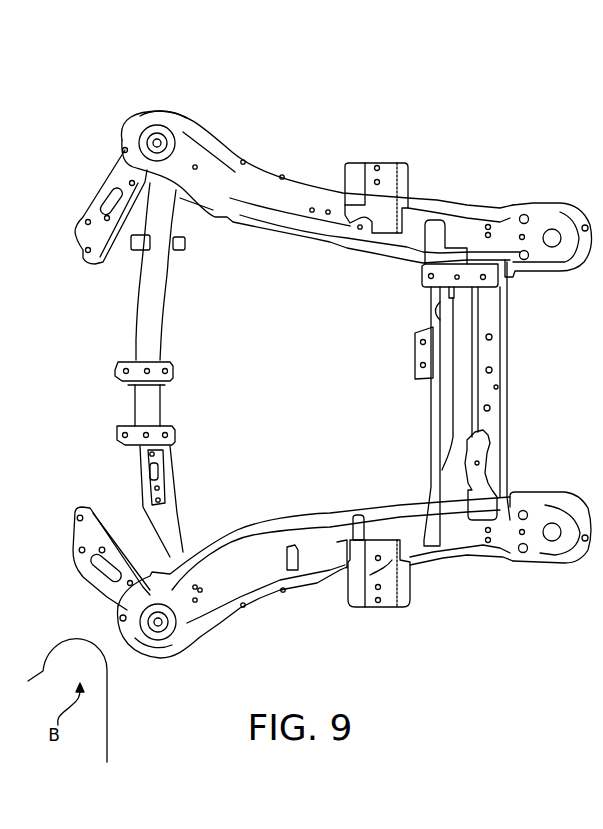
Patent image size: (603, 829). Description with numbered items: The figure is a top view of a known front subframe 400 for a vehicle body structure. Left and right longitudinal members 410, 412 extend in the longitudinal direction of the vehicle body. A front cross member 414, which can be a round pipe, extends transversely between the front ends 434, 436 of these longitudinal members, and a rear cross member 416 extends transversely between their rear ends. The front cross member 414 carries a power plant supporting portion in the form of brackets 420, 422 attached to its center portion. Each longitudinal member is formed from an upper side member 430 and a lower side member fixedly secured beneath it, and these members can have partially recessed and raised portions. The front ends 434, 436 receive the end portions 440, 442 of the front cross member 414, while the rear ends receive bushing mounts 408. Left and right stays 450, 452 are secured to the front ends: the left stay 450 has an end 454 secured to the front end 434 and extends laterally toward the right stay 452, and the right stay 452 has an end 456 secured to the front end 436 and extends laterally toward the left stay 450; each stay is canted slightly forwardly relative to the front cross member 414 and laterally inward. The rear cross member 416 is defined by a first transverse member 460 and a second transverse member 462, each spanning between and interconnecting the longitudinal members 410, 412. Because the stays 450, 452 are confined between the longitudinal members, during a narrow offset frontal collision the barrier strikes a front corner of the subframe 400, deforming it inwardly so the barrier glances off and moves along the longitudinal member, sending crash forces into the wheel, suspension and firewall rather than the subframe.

The front subframe 400 is at (524, 142).
The bushing mounts 408 is at (551, 228).
The left longitudinal member 410 is at (274, 514).
The right longitudinal member 412 is at (316, 246).
The front cross member 414 is at (136, 406).
The rear cross member 416 is at (500, 370).
The bracket 420 is at (176, 431).
The bracket 422 is at (173, 362).
The upper side member 430 is at (270, 193).
The front end of the left longitudinal member 434 is at (138, 640).
The front end of the right longitudinal member 436 is at (163, 114).
The end portion of the front cross member 440 is at (182, 528).
The end portion of the front cross member 442 is at (180, 220).
The left stay 450 is at (77, 506).
The right stay 452 is at (90, 238).
The end of the left stay 454 is at (163, 627).
The end of the right stay 456 is at (155, 138).
The first transverse member 460 is at (427, 438).
The second transverse member 462 is at (507, 457).